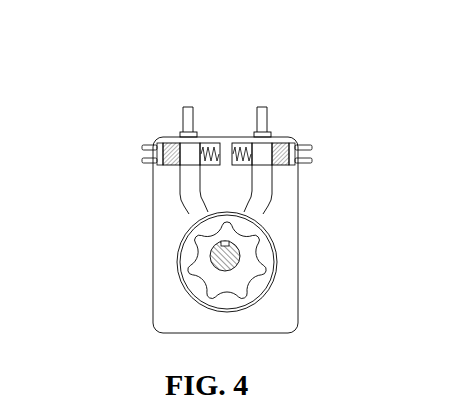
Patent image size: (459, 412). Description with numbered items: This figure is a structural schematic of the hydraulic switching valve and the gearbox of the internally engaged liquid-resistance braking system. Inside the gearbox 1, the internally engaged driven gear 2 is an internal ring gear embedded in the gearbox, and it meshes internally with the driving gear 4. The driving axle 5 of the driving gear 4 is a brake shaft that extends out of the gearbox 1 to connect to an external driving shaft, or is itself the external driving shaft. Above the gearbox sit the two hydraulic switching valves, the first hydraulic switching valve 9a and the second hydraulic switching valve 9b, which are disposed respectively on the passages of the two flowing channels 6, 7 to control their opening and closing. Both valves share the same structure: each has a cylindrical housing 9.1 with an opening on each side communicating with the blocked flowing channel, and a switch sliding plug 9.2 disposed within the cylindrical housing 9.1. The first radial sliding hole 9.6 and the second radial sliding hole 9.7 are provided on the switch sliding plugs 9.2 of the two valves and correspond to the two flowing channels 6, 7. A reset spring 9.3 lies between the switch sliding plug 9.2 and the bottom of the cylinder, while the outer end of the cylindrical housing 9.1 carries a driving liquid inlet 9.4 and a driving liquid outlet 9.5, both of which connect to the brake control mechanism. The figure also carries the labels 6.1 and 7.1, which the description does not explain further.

The gearbox 1 is at (273, 313).
The internally engaged driven gear 2 is at (212, 287).
The driving gear 4 is at (205, 263).
The driving axle 5 is at (232, 257).
The flowing channel 6 is at (261, 208).
The right pin 6.1 is at (263, 122).
The flowing channel 7 is at (192, 204).
The left pin 7.1 is at (190, 120).
The cylindrical housing 9.1 is at (283, 153).
The switch sliding plug 9.2 is at (378, 162).
The reset spring 9.3 is at (207, 145).
The driving liquid inlet 9.4 is at (142, 162).
The driving liquid outlet 9.5 is at (143, 147).
The first radial sliding hole 9.6 is at (264, 155).
The second radial sliding hole 9.7 is at (188, 155).
The first hydraulic switching valve 9a is at (234, 148).
The second hydraulic switching valve 9b is at (218, 145).